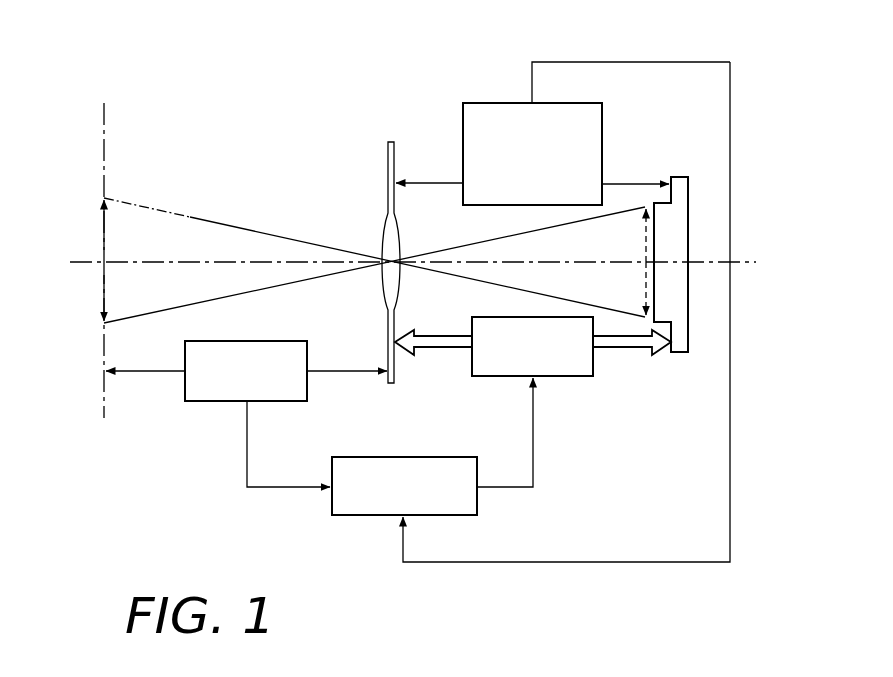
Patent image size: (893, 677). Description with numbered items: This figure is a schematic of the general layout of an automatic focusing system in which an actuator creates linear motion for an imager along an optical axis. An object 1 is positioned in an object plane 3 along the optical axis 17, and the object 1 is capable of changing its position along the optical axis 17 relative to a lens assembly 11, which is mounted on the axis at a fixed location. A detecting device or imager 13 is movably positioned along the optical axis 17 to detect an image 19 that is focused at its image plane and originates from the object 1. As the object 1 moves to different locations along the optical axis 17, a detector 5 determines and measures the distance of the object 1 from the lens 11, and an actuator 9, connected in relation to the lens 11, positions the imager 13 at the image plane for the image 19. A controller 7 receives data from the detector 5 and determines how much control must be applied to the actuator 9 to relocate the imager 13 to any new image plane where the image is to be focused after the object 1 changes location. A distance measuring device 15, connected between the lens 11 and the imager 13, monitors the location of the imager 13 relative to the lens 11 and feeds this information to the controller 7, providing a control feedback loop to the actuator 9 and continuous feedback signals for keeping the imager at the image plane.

The object 1 is at (104, 241).
The object plane 3 is at (104, 346).
The detector 5 is at (207, 402).
The controller 7 is at (345, 517).
The actuator 9 is at (567, 378).
The lens assembly 11 is at (383, 228).
The imager 13 is at (678, 177).
The distance measuring device 15 is at (492, 103).
The optical axis 17 is at (142, 262).
The image 19 is at (644, 274).